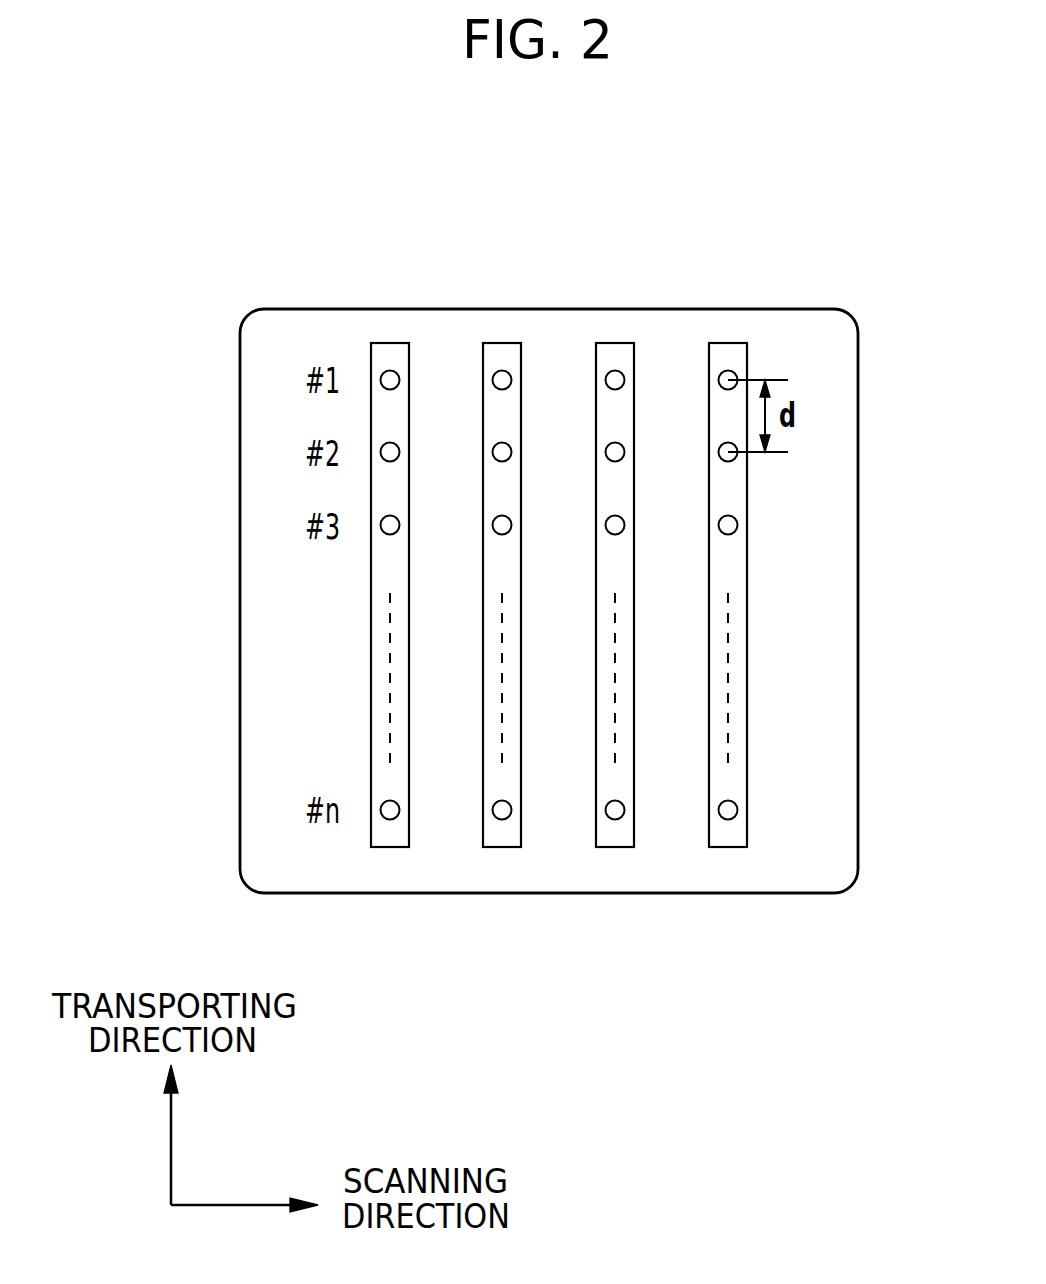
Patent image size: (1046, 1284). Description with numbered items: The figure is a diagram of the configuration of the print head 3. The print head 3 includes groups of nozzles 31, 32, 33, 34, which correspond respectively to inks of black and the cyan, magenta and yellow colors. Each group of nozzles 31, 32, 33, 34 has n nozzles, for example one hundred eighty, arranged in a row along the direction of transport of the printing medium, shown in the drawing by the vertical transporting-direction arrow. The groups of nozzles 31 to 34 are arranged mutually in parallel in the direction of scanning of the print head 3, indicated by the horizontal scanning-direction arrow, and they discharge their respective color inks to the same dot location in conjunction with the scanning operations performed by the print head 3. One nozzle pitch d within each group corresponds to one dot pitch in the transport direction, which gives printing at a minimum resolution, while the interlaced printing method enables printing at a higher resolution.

The print head 3 is at (858, 366).
The group of nozzles 31 is at (391, 343).
The group of nozzles 32 is at (503, 343).
The group of nozzles 33 is at (616, 343).
The group of nozzles 34 is at (729, 343).